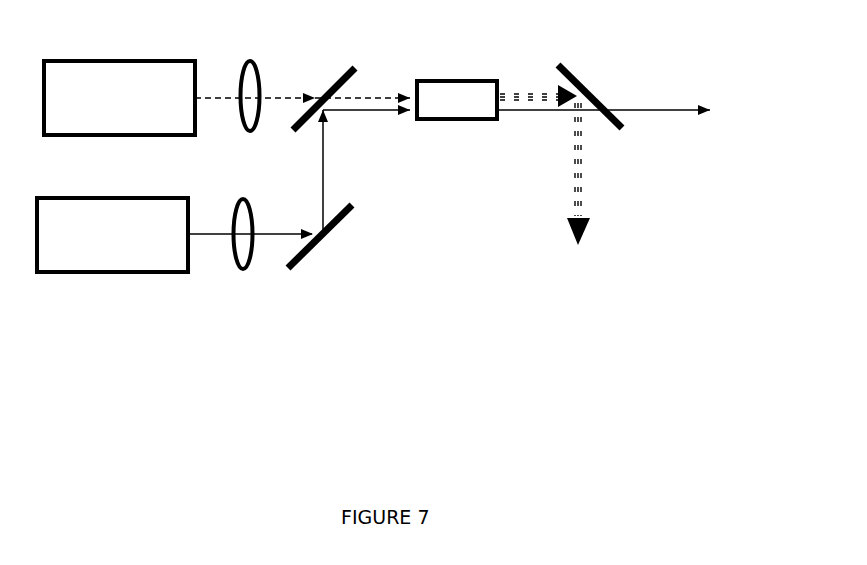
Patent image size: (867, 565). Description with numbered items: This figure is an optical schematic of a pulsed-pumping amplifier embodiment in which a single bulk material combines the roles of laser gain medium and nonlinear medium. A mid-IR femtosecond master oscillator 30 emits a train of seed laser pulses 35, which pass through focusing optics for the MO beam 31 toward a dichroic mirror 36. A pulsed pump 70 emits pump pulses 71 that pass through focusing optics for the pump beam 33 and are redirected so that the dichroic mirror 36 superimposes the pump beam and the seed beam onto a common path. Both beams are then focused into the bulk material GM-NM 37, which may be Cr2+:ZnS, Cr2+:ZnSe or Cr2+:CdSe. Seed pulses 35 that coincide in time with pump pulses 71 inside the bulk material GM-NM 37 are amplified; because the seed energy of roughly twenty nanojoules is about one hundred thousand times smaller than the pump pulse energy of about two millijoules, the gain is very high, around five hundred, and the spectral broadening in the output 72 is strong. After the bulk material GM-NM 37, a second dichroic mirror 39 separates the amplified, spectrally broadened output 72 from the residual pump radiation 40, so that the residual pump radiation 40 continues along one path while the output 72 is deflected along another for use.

The master oscillator 30 is at (122, 75).
The focusing optics for MO beam 31 is at (250, 73).
The focusing optics for the pump beam 33 is at (243, 255).
The seed laser pulses 35 is at (293, 85).
The dichroic mirror 36 is at (360, 86).
The bulk material GM-NM 37 is at (453, 103).
The dichroic mirror 39 is at (612, 128).
The residual pump radiation 40 is at (662, 103).
The pulsed pump 70 is at (126, 255).
The pump pulses 71 is at (276, 250).
The output 72 is at (592, 178).